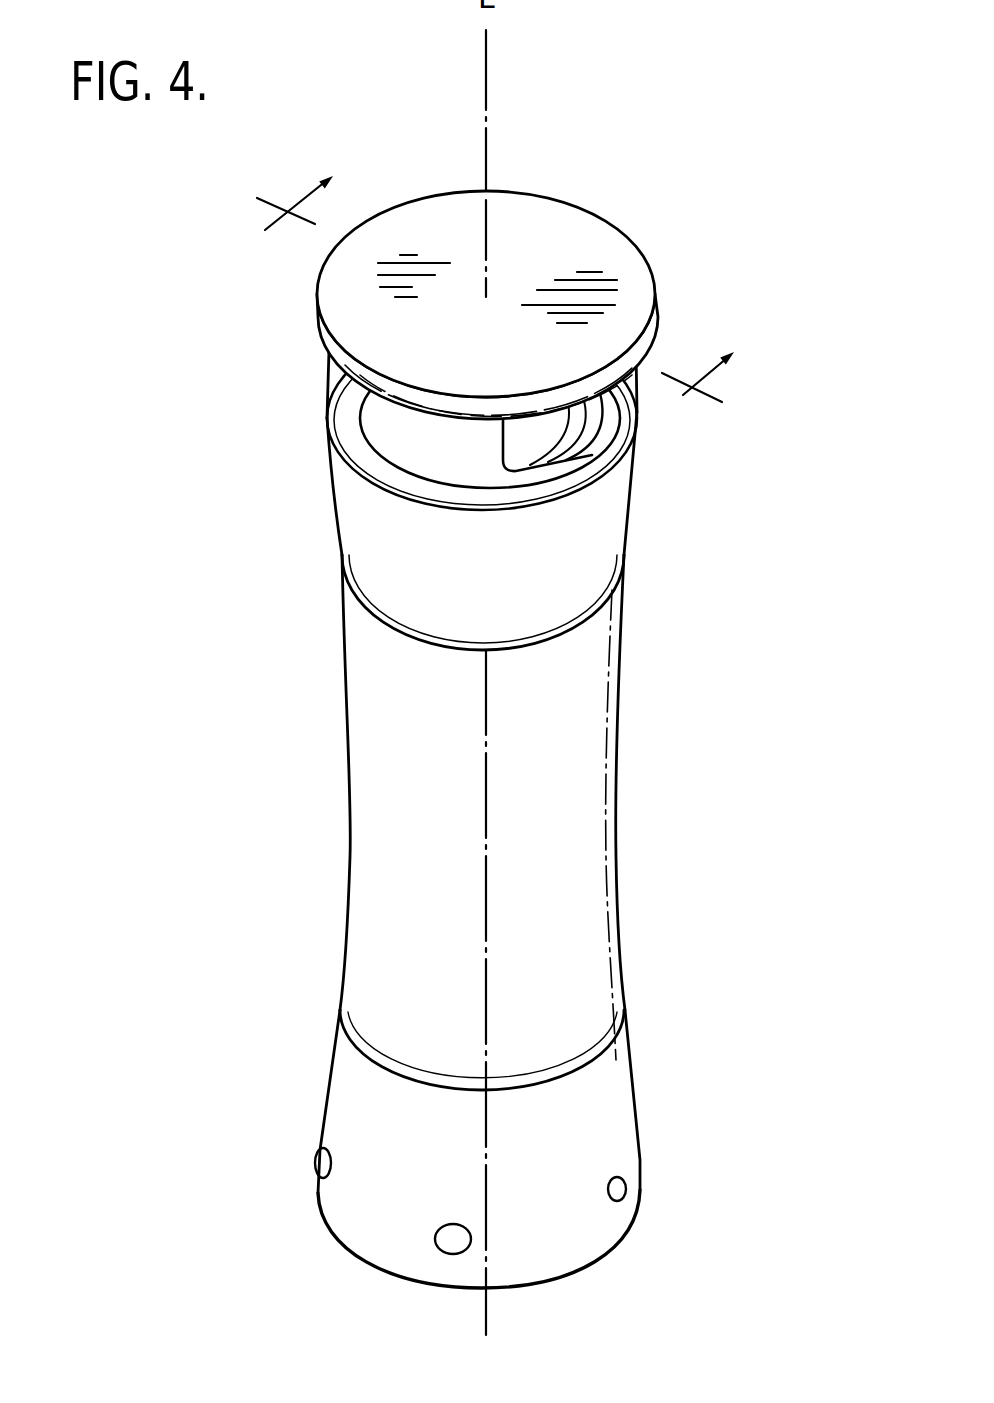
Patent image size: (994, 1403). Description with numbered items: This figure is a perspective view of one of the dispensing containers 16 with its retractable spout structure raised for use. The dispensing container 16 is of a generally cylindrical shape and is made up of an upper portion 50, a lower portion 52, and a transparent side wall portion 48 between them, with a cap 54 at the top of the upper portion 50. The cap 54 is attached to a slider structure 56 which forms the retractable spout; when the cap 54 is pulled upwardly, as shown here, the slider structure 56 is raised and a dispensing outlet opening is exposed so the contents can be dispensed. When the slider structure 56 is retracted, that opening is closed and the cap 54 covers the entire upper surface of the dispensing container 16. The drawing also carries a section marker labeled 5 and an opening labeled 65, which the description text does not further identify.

The section line 5- 5 is at (495, 312).
The dispensing container 16 is at (640, 212).
The transparent side wall portion 48 is at (618, 745).
The upper portion 50 is at (482, 488).
The lower portion 52 is at (633, 1068).
The cap 54 is at (517, 191).
The slider structure 56 is at (396, 430).
The window opening 65 is at (547, 452).